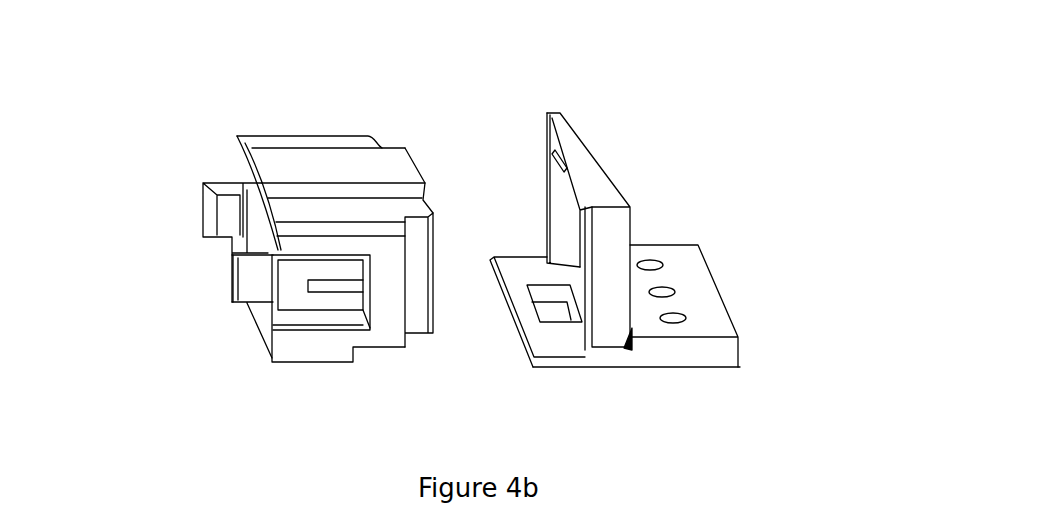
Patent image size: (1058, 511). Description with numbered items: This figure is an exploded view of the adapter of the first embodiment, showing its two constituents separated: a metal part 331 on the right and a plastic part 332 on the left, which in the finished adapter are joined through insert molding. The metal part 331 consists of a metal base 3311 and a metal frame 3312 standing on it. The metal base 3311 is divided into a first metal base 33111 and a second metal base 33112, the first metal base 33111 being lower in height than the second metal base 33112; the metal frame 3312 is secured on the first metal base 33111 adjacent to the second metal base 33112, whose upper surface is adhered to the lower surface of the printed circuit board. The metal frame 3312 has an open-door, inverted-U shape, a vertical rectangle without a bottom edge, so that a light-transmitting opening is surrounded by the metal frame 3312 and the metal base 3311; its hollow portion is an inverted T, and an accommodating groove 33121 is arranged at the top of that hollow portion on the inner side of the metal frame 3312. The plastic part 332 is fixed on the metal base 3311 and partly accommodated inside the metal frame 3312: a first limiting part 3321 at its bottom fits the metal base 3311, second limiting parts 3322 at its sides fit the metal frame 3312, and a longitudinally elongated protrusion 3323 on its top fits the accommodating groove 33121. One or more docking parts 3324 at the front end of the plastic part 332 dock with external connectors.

The metal part 331 is at (887, 53).
The metal base 3311 is at (631, 350).
The first metal base 33111 is at (522, 316).
The second metal base 33112 is at (697, 287).
The metal frame 3312 is at (588, 123).
The accommodating groove 33121 is at (558, 172).
The plastic part 332 is at (98, 45).
The first limiting part 3321 is at (370, 353).
The second limiting part 3322 is at (412, 317).
The longitudinally elongated protrusion 3323 is at (325, 167).
The docking part 3324 is at (237, 283).